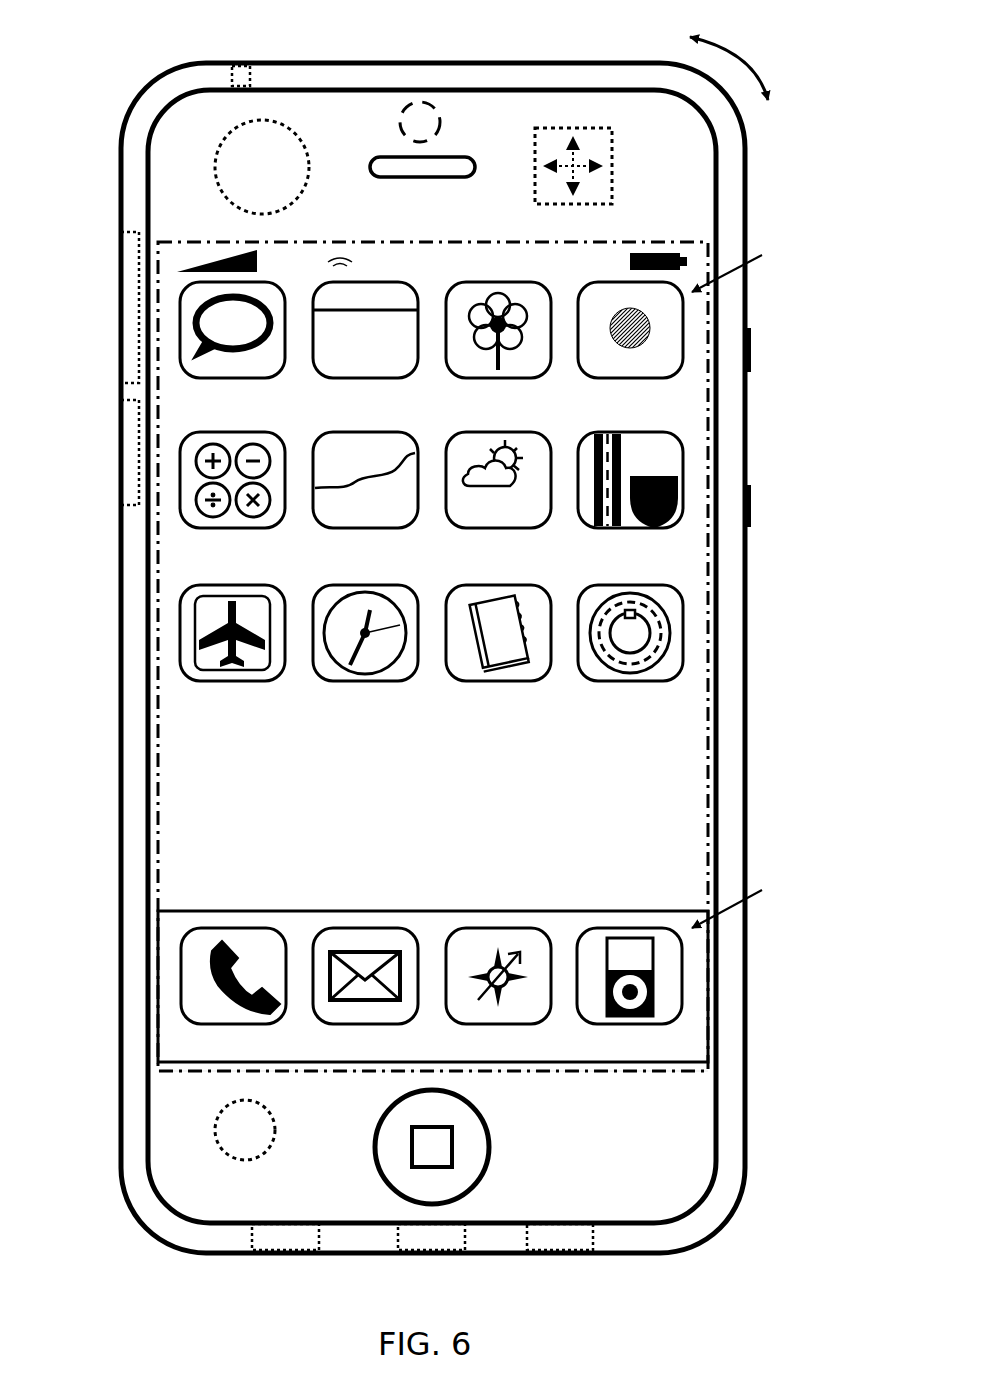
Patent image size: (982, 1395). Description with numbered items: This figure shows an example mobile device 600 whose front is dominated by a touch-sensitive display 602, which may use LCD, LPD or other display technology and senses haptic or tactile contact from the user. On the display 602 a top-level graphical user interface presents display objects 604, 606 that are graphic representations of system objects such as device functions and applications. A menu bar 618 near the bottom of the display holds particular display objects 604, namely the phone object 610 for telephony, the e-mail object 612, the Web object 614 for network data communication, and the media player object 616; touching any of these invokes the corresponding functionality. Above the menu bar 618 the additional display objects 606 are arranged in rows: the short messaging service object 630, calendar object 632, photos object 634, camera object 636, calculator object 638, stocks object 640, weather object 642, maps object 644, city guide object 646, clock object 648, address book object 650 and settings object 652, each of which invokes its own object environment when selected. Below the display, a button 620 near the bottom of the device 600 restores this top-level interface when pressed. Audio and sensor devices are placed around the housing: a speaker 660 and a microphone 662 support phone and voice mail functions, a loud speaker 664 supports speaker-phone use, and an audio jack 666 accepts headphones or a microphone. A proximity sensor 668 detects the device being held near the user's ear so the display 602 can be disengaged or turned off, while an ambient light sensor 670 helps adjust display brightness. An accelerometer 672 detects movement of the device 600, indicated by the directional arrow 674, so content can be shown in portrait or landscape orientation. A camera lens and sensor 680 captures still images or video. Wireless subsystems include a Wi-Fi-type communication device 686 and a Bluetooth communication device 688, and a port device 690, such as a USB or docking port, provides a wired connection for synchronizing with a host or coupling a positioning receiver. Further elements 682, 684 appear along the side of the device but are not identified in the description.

The mobile device 600 is at (530, 63).
The touch-sensitive display 602 is at (640, 242).
The display objects 604 is at (752, 893).
The additional display objects 606 is at (752, 258).
The phone object 610 is at (235, 928).
The e-mail object 612 is at (366, 928).
The Web object 614 is at (499, 928).
The media player object 616 is at (631, 928).
The menu bar 618 is at (578, 1071).
The button 620 is at (490, 1145).
The short messaging service (SMS) object 630 is at (268, 378).
The calendar object 632 is at (403, 378).
The photos object 634 is at (536, 378).
The camera object 636 is at (675, 378).
The calculator object 638 is at (272, 528).
The stocks object 640 is at (405, 528).
The weather object 642 is at (537, 528).
The maps object 644 is at (675, 528).
The city guide object 646 is at (270, 681).
The clock object 648 is at (404, 681).
The address book object 650 is at (536, 681).
The settings object 652 is at (675, 681).
The speaker 660 is at (393, 177).
The microphone 662 is at (319, 1240).
The loud speaker 664 is at (593, 1240).
The audio jack 666 is at (250, 82).
The proximity sensor 668 is at (216, 168).
The ambient light sensor 670 is at (265, 1150).
The accelerometer 672 is at (612, 180).
The directional arrow 674 is at (762, 80).
The camera lens and sensor 680 is at (440, 120).
The volume up button 682 is at (751, 350).
The volume down button 684 is at (751, 505).
The 802.11b/g communication device 686 is at (124, 232).
The Bluetooth communication device 688 is at (124, 402).
The port device 690 is at (465, 1240).